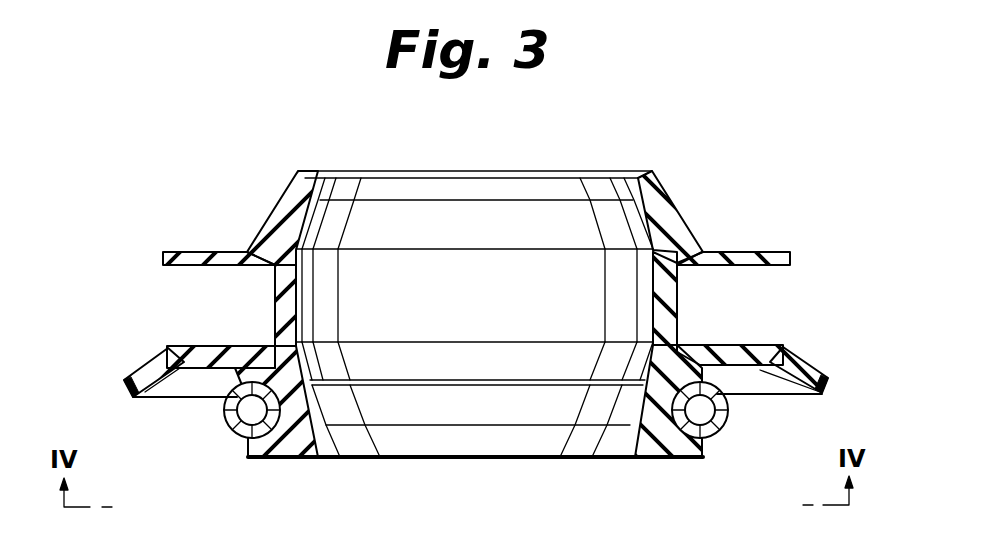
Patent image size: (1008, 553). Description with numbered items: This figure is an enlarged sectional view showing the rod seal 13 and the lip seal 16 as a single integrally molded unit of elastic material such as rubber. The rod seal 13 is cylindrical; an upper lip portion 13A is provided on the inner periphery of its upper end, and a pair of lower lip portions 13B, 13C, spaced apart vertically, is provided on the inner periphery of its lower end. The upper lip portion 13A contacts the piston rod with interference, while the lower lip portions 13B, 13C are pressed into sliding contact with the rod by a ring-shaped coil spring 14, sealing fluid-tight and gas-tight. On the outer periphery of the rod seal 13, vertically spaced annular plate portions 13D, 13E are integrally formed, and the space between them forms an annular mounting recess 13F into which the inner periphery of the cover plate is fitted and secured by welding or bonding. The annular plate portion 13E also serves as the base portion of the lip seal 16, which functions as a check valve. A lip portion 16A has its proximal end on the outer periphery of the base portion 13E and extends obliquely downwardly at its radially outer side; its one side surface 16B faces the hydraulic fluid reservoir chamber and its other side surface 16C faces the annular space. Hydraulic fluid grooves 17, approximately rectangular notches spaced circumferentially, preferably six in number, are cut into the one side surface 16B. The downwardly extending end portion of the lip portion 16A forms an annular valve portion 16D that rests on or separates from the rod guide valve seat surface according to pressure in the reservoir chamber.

The rod seal 13 is at (682, 194).
The upper lip portion 13A is at (298, 207).
The lower lip portion 13B is at (650, 378).
The lower lip portion 13C is at (332, 457).
The annular plate portion 13D is at (210, 252).
The annular plate portion 13E is at (733, 345).
The annular mounting recess 13F is at (248, 342).
The ring-shaped coil spring 14 is at (712, 440).
The lip seal 16 is at (800, 365).
The lip portion 16A is at (163, 367).
The one side surface 16B is at (188, 387).
The other side surface 16C is at (133, 373).
The valve portion 16D is at (835, 383).
The hydraulic fluid grooves 17 is at (170, 400).